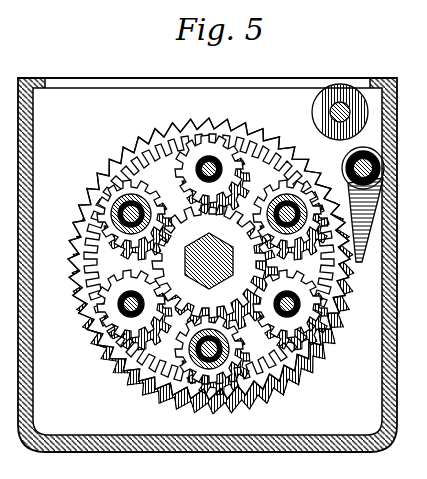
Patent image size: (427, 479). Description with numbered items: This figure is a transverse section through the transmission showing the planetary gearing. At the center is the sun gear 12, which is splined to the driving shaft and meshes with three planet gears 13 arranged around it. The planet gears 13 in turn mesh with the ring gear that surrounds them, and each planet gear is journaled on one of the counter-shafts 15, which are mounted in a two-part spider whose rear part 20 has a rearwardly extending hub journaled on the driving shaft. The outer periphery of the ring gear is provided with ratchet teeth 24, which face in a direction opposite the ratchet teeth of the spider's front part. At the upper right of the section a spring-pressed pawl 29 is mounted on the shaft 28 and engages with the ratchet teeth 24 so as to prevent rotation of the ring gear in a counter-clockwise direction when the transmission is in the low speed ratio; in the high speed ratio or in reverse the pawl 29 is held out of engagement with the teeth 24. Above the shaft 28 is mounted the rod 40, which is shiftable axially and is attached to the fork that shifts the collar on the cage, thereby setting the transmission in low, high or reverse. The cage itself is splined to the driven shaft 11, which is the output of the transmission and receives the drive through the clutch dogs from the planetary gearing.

The driven shaft 11 is at (150, 148).
The sun gear 12 is at (243, 212).
The planet gears 13 is at (190, 178).
The counter-shafts 15 is at (209, 158).
The rear part of the spider 20 is at (110, 232).
The ratchet teeth 24 is at (262, 128).
The shaft 28 is at (348, 165).
The spring-pressed pawl 29 is at (358, 266).
The rod 40 is at (330, 111).